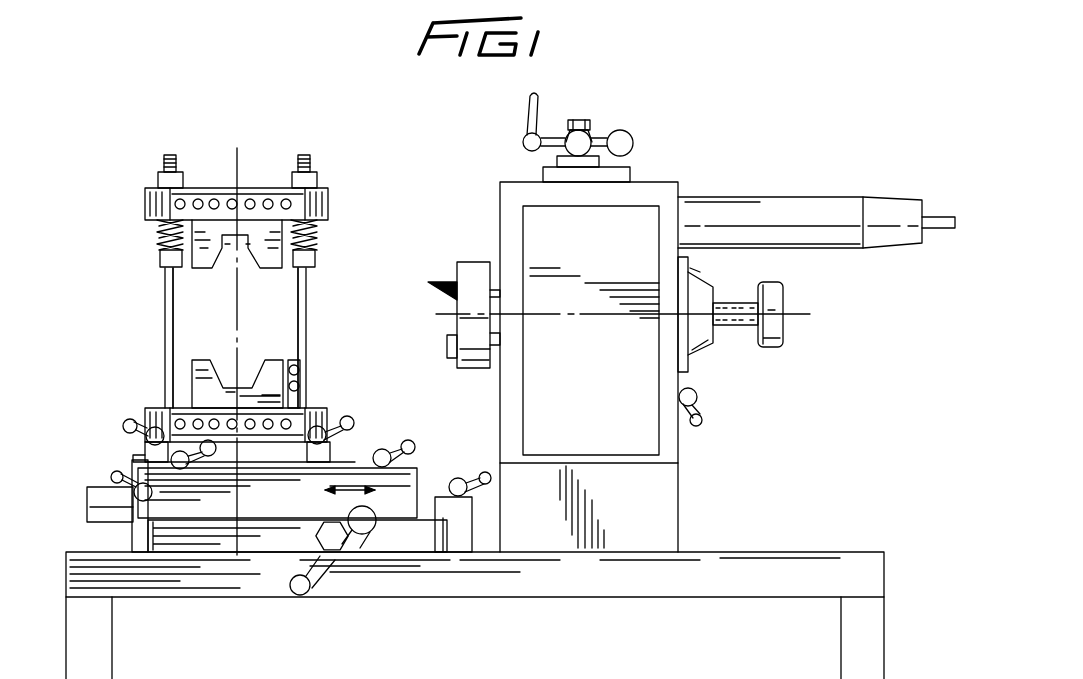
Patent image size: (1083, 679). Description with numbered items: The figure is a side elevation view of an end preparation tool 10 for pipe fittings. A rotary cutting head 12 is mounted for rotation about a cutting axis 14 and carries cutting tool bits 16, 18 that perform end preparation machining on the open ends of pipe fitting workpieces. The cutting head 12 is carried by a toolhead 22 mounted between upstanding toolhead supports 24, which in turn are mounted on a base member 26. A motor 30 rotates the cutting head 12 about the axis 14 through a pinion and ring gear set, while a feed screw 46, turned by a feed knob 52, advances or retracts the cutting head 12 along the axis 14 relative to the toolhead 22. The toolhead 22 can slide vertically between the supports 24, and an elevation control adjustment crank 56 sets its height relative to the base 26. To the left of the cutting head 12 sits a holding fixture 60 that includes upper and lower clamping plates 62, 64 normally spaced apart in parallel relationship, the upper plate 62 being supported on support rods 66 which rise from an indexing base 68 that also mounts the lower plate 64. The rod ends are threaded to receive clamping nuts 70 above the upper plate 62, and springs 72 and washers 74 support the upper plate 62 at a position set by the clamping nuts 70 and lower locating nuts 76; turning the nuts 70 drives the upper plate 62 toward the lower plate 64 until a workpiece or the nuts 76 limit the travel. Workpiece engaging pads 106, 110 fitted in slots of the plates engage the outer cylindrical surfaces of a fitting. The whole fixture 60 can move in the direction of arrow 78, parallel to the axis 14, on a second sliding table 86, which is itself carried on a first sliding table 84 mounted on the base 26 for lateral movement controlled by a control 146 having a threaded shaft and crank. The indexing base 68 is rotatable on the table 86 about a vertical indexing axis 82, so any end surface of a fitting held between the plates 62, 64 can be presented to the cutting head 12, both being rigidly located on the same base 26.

The end preparation tool 10 is at (629, 123).
The rotary cutting head 12 is at (470, 262).
The cutting axis 14 is at (443, 315).
The cutting tool bit 16 is at (445, 285).
The cutting tool bit 18 is at (447, 350).
The toolhead 22 is at (703, 352).
The toolhead supports 24 is at (620, 510).
The base member 26 is at (783, 560).
The motor 30 is at (790, 205).
The feed screw 46 is at (733, 313).
The feed knob 52 is at (773, 298).
The elevation control adjustment crank 56 is at (524, 142).
The holding fixture 60 is at (153, 289).
The upper clamping plate 62 is at (147, 196).
The lower clamping plate 64 is at (155, 410).
The support rods 66 is at (172, 334).
The indexing base 68 is at (274, 457).
The clamping nuts 70 is at (160, 176).
The springs 72 is at (158, 230).
The washers 74 is at (318, 221).
The lower locating nuts 76 is at (316, 262).
The arrow 78 is at (345, 493).
The vertical indexing axis 82 is at (238, 184).
The first sliding table 84 is at (411, 544).
The second sliding table 86 is at (274, 506).
The workpiece engaging pad 106 is at (298, 364).
The workpiece engaging pad 110 is at (289, 330).
The control 146 is at (307, 593).